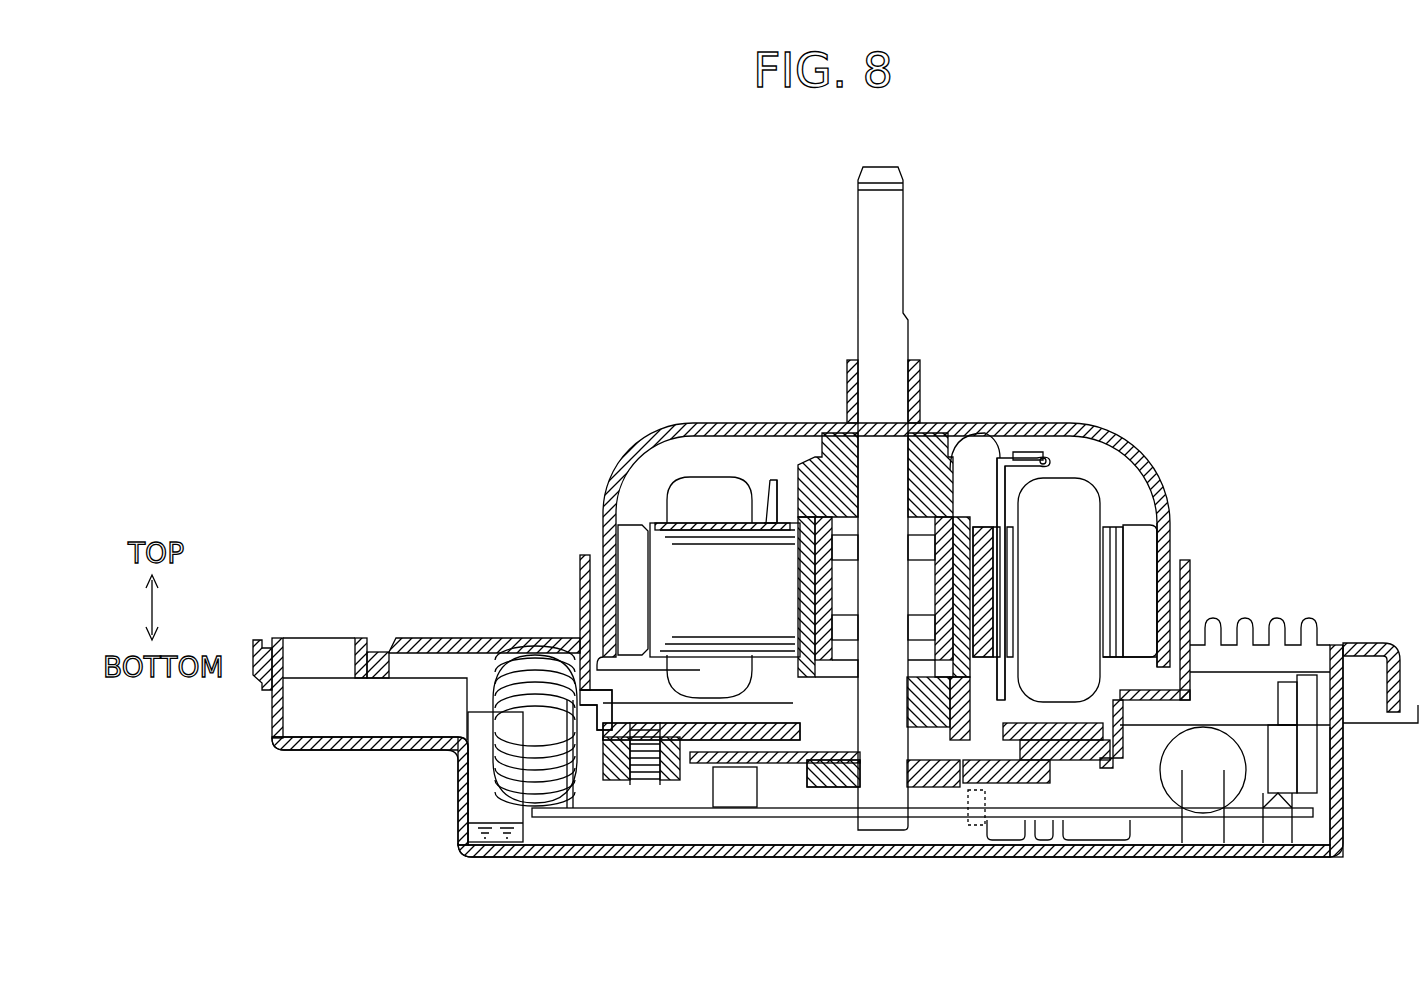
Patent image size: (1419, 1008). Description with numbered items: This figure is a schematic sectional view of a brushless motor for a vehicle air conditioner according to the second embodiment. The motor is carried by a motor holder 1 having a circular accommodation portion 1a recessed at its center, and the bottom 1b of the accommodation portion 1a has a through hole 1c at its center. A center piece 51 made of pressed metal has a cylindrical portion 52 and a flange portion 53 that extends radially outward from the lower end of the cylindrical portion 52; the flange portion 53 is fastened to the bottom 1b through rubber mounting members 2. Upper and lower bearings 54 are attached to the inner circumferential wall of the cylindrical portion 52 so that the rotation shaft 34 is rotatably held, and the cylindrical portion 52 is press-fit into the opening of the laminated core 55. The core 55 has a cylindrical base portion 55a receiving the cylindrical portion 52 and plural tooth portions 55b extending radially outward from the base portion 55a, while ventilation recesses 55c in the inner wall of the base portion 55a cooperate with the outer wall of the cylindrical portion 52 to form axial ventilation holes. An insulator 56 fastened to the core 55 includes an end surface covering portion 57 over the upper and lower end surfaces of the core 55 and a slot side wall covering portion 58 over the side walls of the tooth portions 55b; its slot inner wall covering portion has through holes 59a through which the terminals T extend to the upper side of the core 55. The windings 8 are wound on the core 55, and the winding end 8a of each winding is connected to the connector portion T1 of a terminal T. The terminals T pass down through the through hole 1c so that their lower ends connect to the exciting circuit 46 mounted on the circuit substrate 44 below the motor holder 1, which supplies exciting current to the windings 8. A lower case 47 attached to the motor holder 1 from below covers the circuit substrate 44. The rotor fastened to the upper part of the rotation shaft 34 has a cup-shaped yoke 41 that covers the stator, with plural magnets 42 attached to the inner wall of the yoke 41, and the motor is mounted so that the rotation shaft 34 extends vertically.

The motor holder 1 is at (440, 638).
The accommodation portion 1a is at (600, 690).
The bottom 1b is at (727, 772).
The through hole 1c is at (806, 790).
The mounting members 2 is at (690, 782).
The windings 8 is at (1085, 482).
The winding end 8a is at (1045, 470).
The rotation shaft 34 is at (905, 235).
The yoke 41 is at (1158, 497).
The magnets 42 is at (1150, 548).
The circuit substrate 44 is at (1240, 817).
The exciting circuit 46 is at (1287, 717).
The lower case 47 is at (620, 850).
The center piece 51 is at (965, 455).
The cylindrical portion 52 is at (800, 583).
The flange portion 53 is at (710, 725).
The bearings 54 is at (866, 507).
The core 55 is at (665, 578).
The base portion 55a is at (985, 597).
The tooth portions 55b is at (680, 520).
The ventilation recesses 55c is at (776, 522).
The insulator 56 is at (766, 500).
The end surface covering portion 57 is at (696, 530).
The slot side wall covering portion 58 is at (1118, 526).
The through holes 59a is at (990, 586).
The terminals T is at (1000, 548).
The connector portion T1 is at (1015, 460).